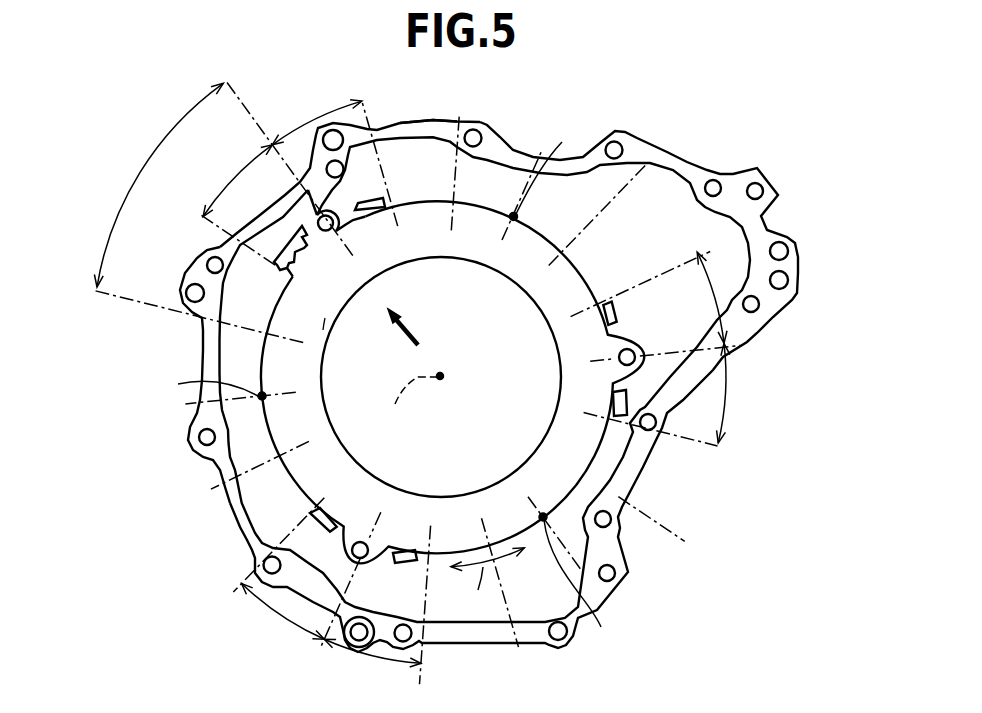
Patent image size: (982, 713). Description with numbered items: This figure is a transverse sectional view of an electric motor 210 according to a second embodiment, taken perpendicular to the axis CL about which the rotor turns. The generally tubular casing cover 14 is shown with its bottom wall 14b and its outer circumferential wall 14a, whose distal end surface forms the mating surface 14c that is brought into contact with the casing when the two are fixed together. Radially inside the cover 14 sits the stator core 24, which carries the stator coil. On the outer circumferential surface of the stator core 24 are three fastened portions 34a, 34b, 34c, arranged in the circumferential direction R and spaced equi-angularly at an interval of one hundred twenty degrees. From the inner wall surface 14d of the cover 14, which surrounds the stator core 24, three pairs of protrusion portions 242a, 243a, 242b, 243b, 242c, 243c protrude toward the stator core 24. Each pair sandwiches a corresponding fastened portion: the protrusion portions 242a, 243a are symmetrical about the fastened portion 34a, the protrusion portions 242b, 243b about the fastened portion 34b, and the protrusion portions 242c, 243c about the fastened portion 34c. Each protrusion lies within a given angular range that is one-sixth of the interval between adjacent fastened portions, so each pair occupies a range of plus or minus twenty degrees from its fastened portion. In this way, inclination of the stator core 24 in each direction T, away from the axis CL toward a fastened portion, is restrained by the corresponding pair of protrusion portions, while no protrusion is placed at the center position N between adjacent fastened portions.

The electric motor 210 is at (776, 87).
The casing cover 14 is at (685, 122).
The outer circumferential wall 14a is at (421, 119).
The bottom wall 14b is at (505, 194).
The mating surface 14c is at (235, 505).
The inner wall surface 14d is at (329, 239).
The stator core 24 is at (503, 296).
The fastened portion 34a is at (362, 563).
The fastened portion 34b is at (272, 266).
The fastened portion 34c is at (622, 344).
The protrusion portion 242a is at (406, 545).
The protrusion portion 242b is at (328, 326).
The protrusion portion 242c is at (580, 316).
The protrusion portion 243a is at (316, 510).
The protrusion portion 243b is at (380, 226).
The protrusion portion 243c is at (613, 395).